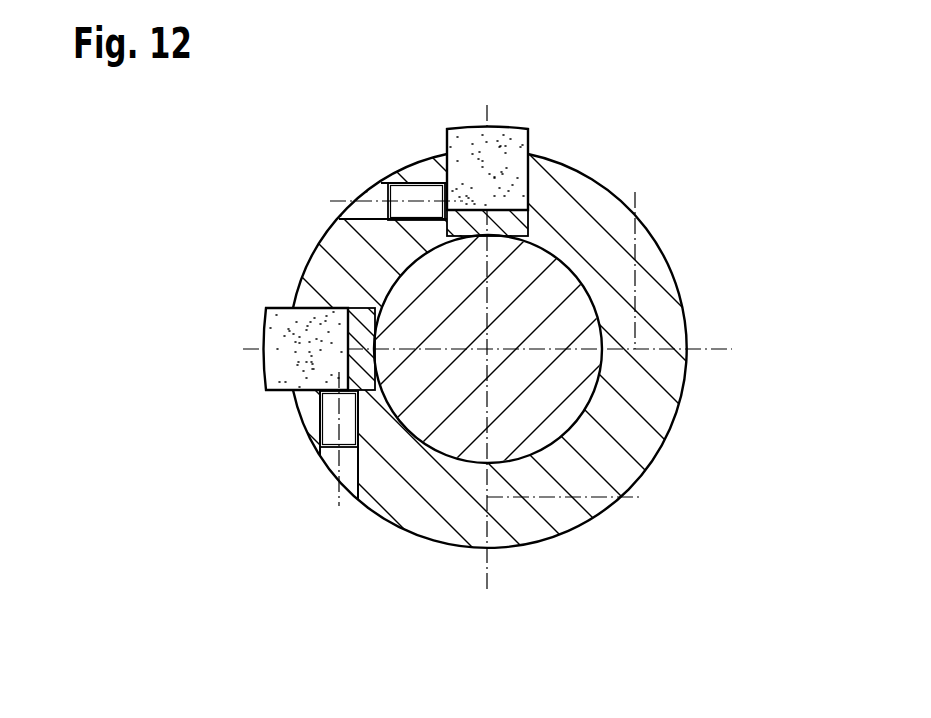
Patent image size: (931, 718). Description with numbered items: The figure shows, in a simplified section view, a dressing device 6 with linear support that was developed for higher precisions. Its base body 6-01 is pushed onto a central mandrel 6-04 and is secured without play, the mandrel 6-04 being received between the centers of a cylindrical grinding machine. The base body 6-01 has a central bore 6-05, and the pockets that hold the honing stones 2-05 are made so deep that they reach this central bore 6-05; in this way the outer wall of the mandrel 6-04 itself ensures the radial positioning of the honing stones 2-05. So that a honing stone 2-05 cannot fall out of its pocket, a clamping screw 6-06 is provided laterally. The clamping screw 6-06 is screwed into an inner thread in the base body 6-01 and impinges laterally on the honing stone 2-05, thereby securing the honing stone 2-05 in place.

The dressing device 6 is at (764, 146).
The base body 6-01 is at (657, 310).
The mandrel 6-04 is at (523, 420).
The central bore 6-05 is at (596, 386).
The clamping screw 6-06 is at (423, 192).
The honing stone 2-05 is at (508, 160).